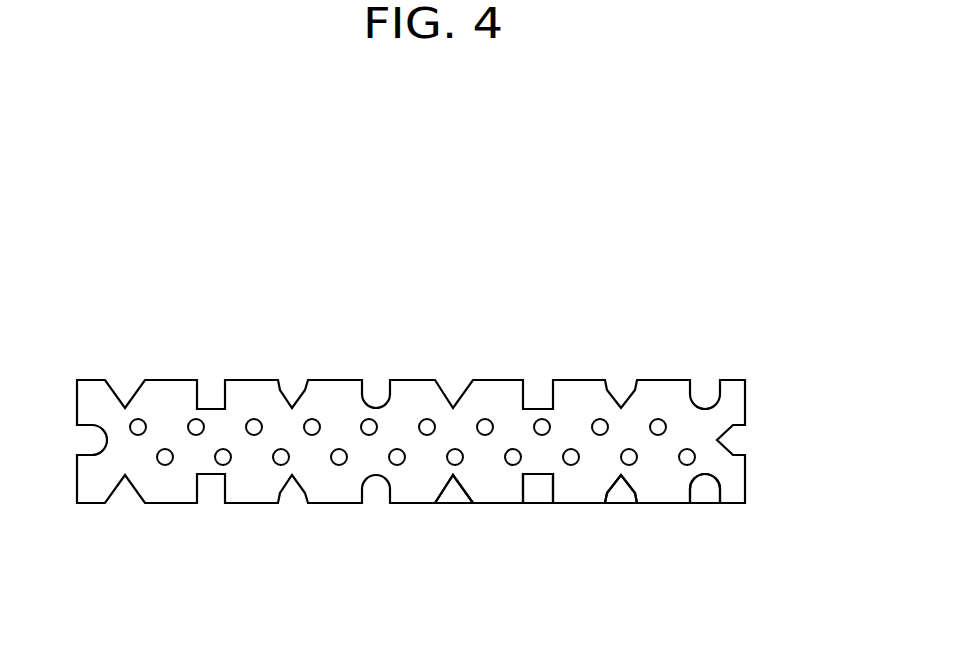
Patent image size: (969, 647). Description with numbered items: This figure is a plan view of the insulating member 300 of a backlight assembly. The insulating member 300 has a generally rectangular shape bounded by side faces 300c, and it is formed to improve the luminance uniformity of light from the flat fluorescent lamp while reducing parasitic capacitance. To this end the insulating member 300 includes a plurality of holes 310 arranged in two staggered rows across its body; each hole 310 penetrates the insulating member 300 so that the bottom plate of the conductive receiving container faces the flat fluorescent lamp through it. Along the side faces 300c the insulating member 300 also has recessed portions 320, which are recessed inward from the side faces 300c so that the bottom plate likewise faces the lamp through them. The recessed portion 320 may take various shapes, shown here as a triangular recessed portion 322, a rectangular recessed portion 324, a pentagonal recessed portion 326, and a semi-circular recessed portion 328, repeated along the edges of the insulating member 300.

The insulating member 300 is at (447, 332).
The side faces 300c is at (252, 380).
The hole 310 is at (318, 421).
The recessed portion 320 is at (435, 579).
The triangular recessed portion 322 is at (450, 492).
The rectangular recessed portion 324 is at (535, 492).
The pentagonal recessed portion 326 is at (619, 492).
The semi-circular recessed portion 328 is at (704, 492).